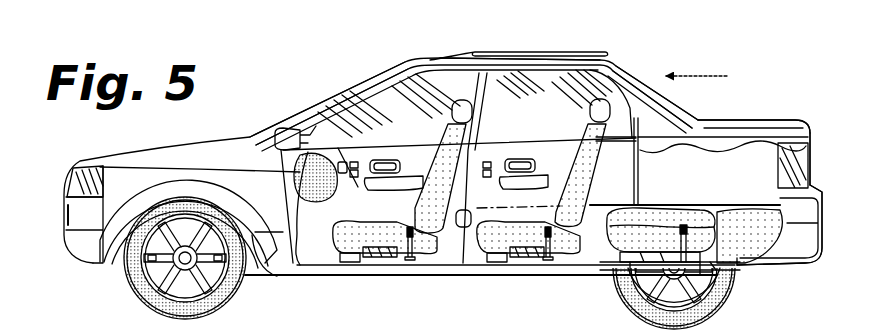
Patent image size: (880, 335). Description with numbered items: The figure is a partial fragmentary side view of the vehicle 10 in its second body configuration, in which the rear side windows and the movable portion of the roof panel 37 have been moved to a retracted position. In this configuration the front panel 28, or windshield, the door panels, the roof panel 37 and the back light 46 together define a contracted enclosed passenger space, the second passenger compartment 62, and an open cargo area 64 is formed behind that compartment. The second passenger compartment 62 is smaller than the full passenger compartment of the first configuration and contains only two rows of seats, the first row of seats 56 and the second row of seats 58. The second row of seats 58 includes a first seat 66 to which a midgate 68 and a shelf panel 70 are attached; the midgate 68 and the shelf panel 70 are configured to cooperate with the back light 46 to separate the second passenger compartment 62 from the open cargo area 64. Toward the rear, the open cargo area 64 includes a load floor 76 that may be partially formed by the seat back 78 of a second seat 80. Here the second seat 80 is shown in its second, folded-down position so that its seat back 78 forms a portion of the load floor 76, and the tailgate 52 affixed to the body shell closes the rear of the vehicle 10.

The vehicle 10 is at (257, 58).
The front panel 28 is at (323, 98).
The roof panel 37 is at (454, 60).
The back light 46 is at (631, 72).
The tailgate 52 is at (813, 158).
The first row of seats 56 is at (436, 151).
The second row of seats 58 is at (589, 99).
The second passenger compartment 62 is at (431, 99).
The open cargo area 64 is at (739, 115).
The first seat 66 is at (534, 222).
The midgate 68 is at (638, 200).
The shelf panel 70 is at (675, 203).
The load floor 76 is at (745, 197).
The seat back 78 is at (647, 197).
The second seat 80 is at (604, 228).